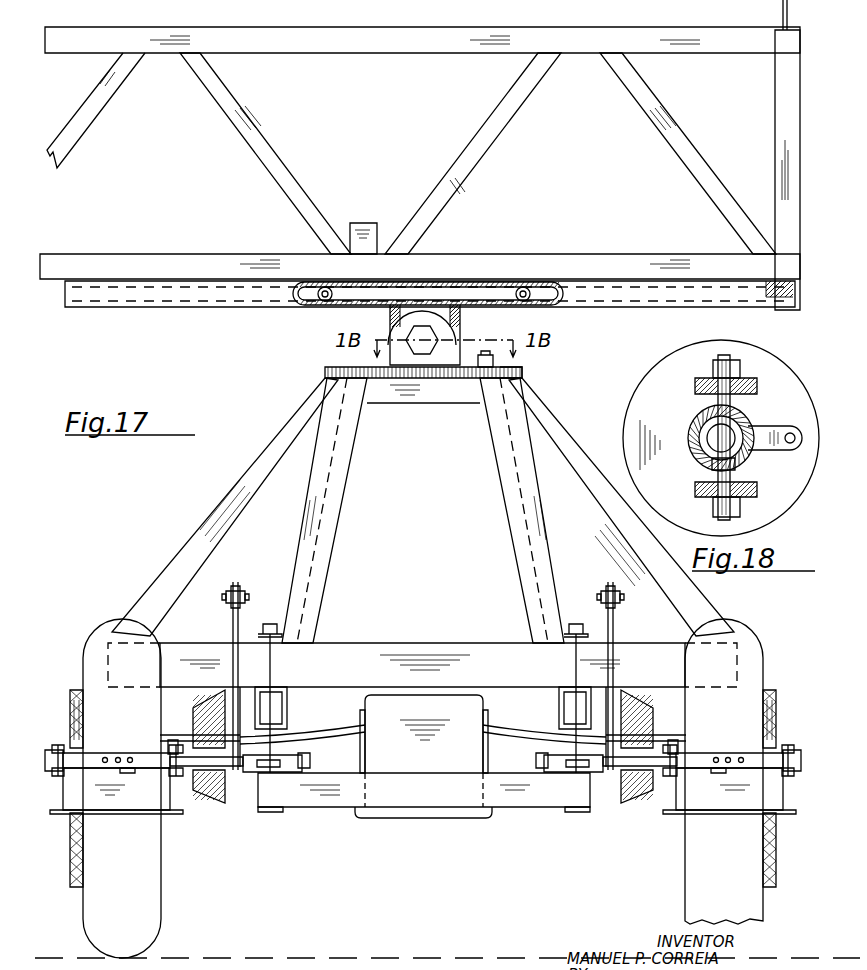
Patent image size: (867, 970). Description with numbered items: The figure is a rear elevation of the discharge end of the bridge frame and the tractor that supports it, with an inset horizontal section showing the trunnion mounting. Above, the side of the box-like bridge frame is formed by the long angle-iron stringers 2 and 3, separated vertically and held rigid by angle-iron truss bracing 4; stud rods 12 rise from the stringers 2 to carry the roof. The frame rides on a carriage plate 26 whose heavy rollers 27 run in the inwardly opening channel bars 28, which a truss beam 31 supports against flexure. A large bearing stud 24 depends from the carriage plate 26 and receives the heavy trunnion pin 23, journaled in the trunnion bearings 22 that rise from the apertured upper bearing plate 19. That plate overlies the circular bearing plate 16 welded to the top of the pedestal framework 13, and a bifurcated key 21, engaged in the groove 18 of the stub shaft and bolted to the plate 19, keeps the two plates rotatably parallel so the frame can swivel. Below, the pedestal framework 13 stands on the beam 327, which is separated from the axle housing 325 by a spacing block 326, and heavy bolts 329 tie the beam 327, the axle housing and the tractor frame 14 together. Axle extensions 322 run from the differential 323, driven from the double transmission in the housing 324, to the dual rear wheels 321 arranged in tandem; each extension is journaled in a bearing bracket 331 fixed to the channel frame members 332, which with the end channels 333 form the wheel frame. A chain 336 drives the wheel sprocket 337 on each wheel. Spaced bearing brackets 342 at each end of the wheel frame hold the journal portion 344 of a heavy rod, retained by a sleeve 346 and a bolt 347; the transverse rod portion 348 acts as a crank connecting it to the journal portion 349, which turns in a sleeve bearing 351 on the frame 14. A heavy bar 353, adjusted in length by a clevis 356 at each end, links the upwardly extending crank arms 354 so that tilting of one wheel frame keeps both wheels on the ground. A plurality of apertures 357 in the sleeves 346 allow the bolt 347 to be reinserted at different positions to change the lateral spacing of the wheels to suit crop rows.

In FIG. 17, the angle-iron stringer 2 is at (399, 46).
In FIG. 17, the angle-iron stringer 3 is at (548, 258).
In FIG. 17, the truss bracing 4 is at (72, 132).
In FIG. 17, the stud rod 12 is at (783, 8).
In FIG. 17, the pedestal type framework 13 is at (452, 400).
In FIG. 17, the tractor frame 14 is at (302, 797).
In FIG. 17, the bearing plate 16 is at (325, 373).
In FIG. 18, the groove 18 is at (707, 438).
In FIG. 17, the second bearing plate 19 is at (522, 373).
In FIG. 18, the second bearing plate 19 is at (675, 395).
In FIG. 17, the bifurcated key 21 is at (470, 365).
In FIG. 18, the bifurcated key 21 is at (776, 428).
In FIG. 17, the trunnion bearing 22 is at (445, 328).
In FIG. 18, the trunnion bearing 22 is at (750, 380).
In FIG. 18, the trunnion pin 23 is at (728, 464).
In FIG. 17, the bearing stud 24 is at (392, 312).
In FIG. 18, the bearing stud 24 is at (700, 448).
In FIG. 17, the carriage plate 26 is at (432, 290).
In FIG. 17, the roller 27 is at (523, 287).
In FIG. 17, the channel bar 28 is at (256, 298).
In FIG. 17, the truss beam 31 is at (358, 223).
In FIG. 17, the dual rear wheel 321 is at (135, 888).
In FIG. 17, the axle extension 322 is at (192, 752).
In FIG. 17, the differential 323 is at (405, 760).
In FIG. 17, the transmission housing 324 is at (448, 818).
In FIG. 17, the axle housing 325 is at (350, 756).
In FIG. 17, the spacing block 326 is at (288, 705).
In FIG. 17, the beam 327 is at (355, 680).
In FIG. 17, the heavy bolt 329 is at (270, 624).
In FIG. 17, the bearing bracket 331 is at (173, 738).
In FIG. 17, the channel frame member 332 is at (178, 813).
In FIG. 17, the end channel 333 is at (100, 808).
In FIG. 17, the chain 336 is at (75, 862).
In FIG. 17, the wheel sprocket 337 is at (70, 832).
In FIG. 17, the bearing bracket 342 is at (55, 773).
In FIG. 17, the journal portion 344 is at (46, 752).
In FIG. 17, the sleeve 346 is at (96, 754).
In FIG. 17, the bolt 347 is at (120, 757).
In FIG. 17, the transverse rod portion 348 is at (196, 778).
In FIG. 17, the journal portion 349 is at (310, 762).
In FIG. 17, the sleeve bearing 351 is at (290, 756).
In FIG. 17, the heavy bar 353 is at (244, 593).
In FIG. 17, the crank arm 354 is at (232, 624).
In FIG. 17, the clevis 356 is at (226, 600).
In FIG. 17, the aperture 357 is at (130, 773).